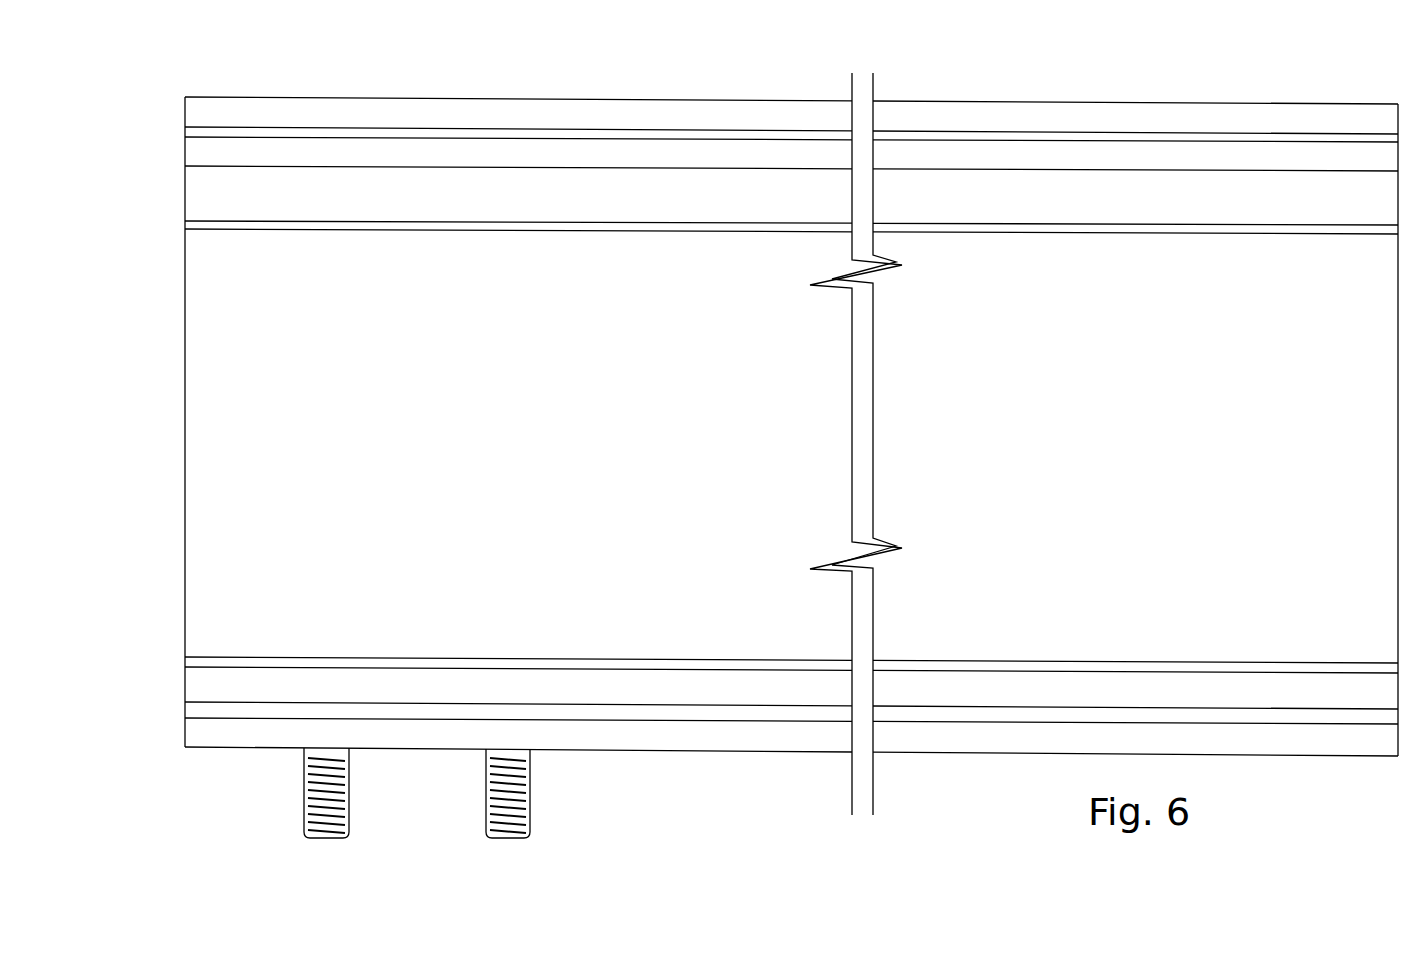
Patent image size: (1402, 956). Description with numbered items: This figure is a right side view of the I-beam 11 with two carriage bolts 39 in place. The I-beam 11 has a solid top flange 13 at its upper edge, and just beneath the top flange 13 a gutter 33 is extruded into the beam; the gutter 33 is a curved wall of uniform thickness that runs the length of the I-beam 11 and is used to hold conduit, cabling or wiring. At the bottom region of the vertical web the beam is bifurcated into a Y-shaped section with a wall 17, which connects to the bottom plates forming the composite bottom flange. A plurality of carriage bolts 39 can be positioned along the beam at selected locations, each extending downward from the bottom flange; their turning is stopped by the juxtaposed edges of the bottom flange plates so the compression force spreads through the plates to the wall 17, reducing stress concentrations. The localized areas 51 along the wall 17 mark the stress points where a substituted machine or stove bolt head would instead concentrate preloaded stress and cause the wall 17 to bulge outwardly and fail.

The I-beam 11 is at (487, 62).
The top flange 13 is at (220, 110).
The gutter 33 is at (208, 195).
The wall 17 is at (210, 686).
The localized area 51 is at (348, 682).
The carriage bolt 39 is at (372, 814).